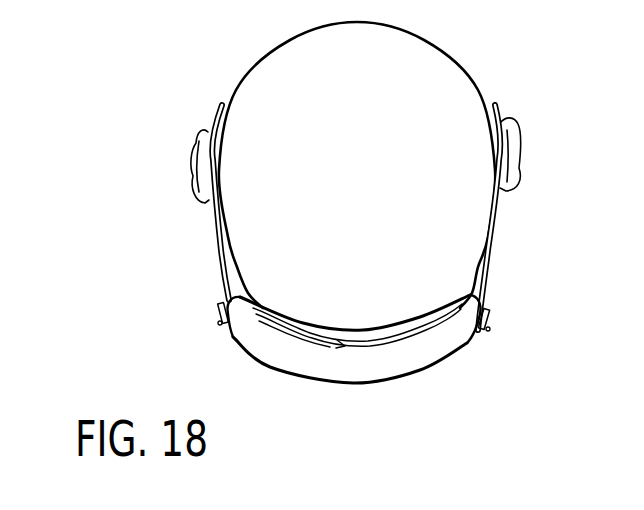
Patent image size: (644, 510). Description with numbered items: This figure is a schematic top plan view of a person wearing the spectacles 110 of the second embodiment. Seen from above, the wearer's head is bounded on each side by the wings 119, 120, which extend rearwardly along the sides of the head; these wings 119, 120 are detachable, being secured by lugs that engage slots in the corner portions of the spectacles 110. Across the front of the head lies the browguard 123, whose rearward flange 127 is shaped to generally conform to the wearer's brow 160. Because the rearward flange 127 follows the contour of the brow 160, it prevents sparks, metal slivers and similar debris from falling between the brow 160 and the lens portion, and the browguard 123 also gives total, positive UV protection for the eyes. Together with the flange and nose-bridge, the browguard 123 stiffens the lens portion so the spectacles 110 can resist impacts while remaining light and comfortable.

The spectacles 110 is at (548, 221).
The wing 119 is at (196, 214).
The wing 120 is at (498, 276).
The browguard 123 is at (426, 357).
The rearward flange 127 is at (297, 338).
The wearer's brow 160 is at (180, 347).